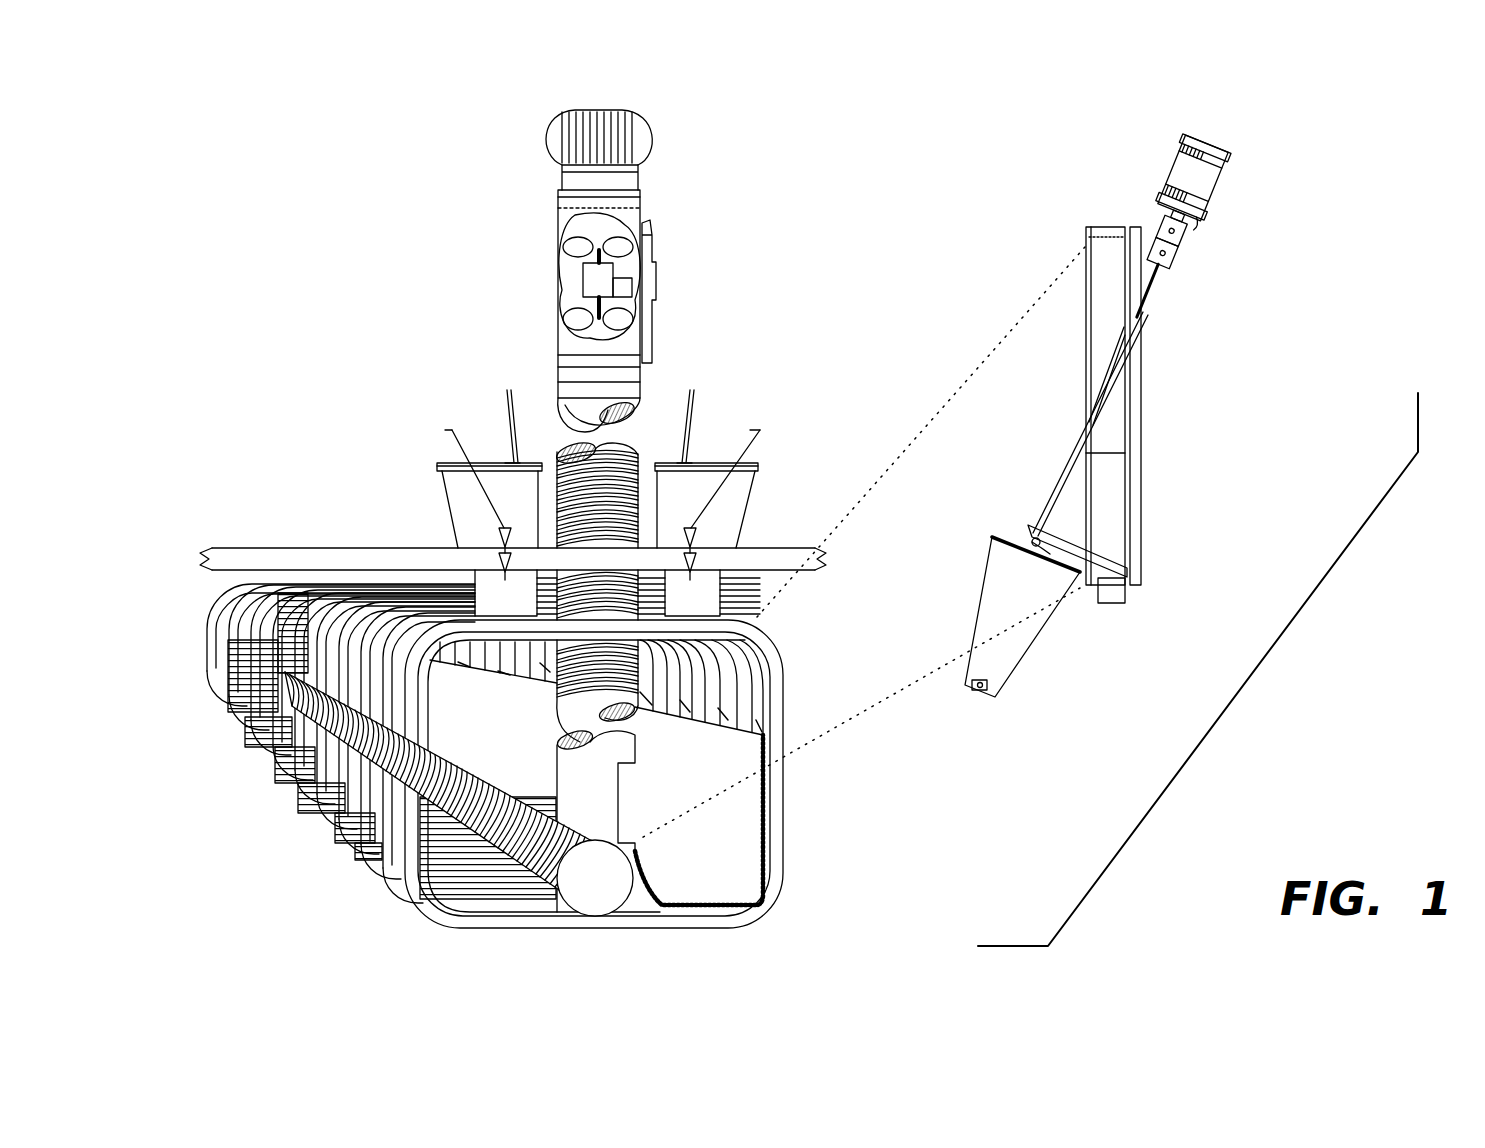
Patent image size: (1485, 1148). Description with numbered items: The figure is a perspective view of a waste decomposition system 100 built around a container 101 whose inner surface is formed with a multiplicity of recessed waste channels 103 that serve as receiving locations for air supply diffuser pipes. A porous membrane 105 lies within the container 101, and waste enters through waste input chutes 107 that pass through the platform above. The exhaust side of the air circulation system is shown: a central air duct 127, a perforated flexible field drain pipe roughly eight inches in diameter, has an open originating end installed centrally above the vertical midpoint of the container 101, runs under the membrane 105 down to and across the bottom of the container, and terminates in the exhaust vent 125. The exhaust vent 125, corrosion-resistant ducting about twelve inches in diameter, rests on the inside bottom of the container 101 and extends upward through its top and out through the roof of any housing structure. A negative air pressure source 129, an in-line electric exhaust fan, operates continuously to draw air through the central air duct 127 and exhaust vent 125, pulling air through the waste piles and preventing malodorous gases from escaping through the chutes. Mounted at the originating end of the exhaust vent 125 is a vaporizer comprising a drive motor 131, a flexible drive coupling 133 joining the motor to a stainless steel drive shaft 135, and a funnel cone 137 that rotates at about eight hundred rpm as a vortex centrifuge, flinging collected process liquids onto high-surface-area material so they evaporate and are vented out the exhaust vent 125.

The waste decomposition system 100 is at (278, 370).
The container 101 is at (770, 650).
The waste channels 103 is at (758, 700).
The porous membrane 105 is at (783, 830).
The waste input chutes 107 is at (722, 594).
The exhaust vent 125 is at (618, 448).
The central air duct 127 is at (473, 780).
The negative air pressure source 129 is at (613, 272).
The drive motor 131 is at (1215, 147).
The flexible drive coupling 133 is at (1158, 228).
The drive shaft 135 is at (1067, 470).
The funnel cone 137 is at (980, 590).